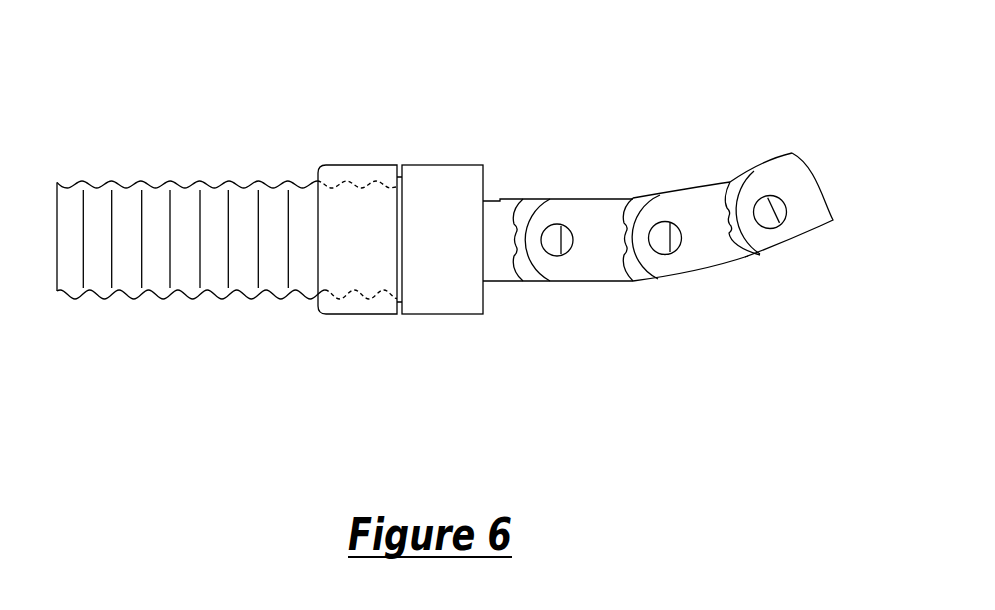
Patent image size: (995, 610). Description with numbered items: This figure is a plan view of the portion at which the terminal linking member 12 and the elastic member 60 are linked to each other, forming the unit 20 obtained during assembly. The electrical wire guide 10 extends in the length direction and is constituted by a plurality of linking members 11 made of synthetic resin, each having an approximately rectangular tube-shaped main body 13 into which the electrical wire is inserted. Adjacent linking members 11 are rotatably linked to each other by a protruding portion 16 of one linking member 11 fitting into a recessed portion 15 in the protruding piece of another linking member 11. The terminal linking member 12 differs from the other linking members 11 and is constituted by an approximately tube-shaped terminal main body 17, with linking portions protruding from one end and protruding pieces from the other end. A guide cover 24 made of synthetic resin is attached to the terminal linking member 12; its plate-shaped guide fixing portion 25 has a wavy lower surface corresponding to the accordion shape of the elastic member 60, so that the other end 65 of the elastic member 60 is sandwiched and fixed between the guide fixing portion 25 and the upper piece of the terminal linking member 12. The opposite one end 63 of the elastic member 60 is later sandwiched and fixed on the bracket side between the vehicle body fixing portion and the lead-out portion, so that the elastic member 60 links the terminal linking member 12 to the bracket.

The electrical wire guide 10 is at (789, 152).
The linking member 11 is at (703, 258).
The terminal linking member 12 is at (499, 201).
The main body 13 is at (700, 210).
The recessed portion 15 is at (658, 230).
The protruding portion 16 is at (659, 246).
The terminal main body 17 is at (440, 208).
The unit 20 is at (427, 315).
The guide cover 24 is at (334, 164).
The guide fixing portion 25 is at (368, 208).
The elastic member 60 is at (198, 181).
The one end 63 is at (63, 290).
The other end 65 is at (348, 300).